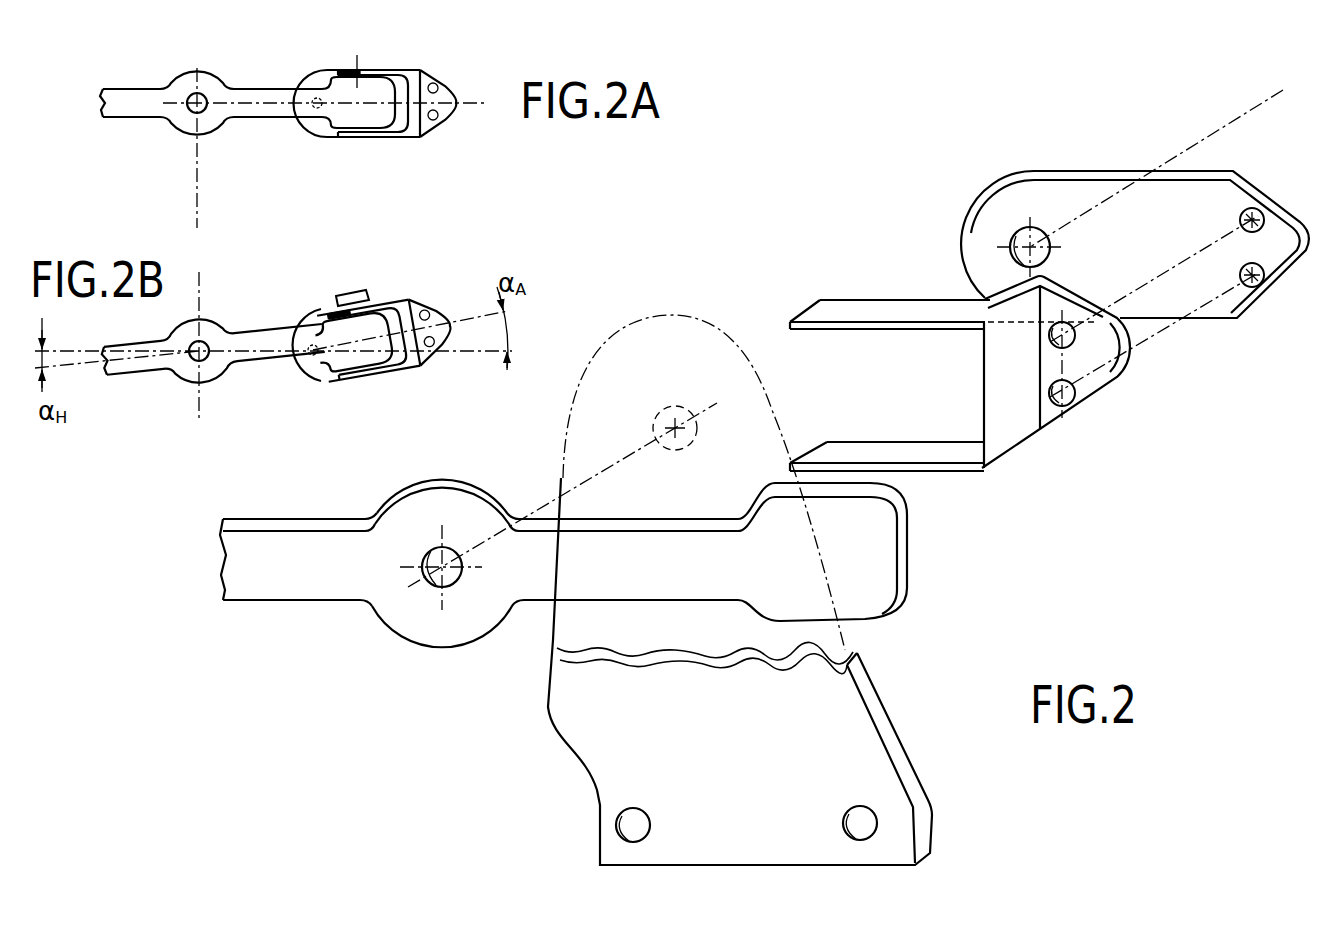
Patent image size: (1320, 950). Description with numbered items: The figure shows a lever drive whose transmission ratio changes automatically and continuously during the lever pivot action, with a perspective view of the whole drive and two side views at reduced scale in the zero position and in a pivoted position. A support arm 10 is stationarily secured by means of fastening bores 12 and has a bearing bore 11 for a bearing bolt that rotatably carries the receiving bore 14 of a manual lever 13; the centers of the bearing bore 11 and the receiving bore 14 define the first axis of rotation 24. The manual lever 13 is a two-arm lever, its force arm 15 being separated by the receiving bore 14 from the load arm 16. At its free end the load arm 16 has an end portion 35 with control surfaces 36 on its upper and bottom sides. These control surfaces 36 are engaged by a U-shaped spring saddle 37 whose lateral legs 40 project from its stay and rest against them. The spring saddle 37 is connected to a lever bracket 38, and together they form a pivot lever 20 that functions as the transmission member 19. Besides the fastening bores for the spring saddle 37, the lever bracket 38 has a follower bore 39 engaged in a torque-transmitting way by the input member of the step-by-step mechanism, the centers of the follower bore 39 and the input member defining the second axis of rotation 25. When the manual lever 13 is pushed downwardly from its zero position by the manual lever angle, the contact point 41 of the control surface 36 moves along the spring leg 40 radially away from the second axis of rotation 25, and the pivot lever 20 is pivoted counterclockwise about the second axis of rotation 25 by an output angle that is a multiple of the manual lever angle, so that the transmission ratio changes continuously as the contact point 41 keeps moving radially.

In FIG. 2, the support arm 10 is at (752, 793).
In FIG. 2, the bearing bore 11 is at (658, 416).
In FIG. 2, the fastening bores 12 is at (634, 821).
In FIG. 2A, the manual lever 13 is at (133, 87).
In FIG. 2, the manual lever 13 is at (563, 584).
In FIG. 2, the receiving bore 14 is at (430, 587).
In FIG. 2, the force arm 15 is at (283, 583).
In FIG. 2A, the load arm 16 is at (265, 110).
In FIG. 2B, the load arm 16 is at (249, 340).
In FIG. 2, the load arm 16 is at (611, 583).
In FIG. 2, the transmission member 19 is at (1003, 300).
In FIG. 2A, the pivot lever 20 is at (453, 88).
In FIG. 2B, the pivot lever 20 is at (440, 300).
In FIG. 2, the pivot lever 20 is at (1243, 320).
In FIG. 2A, the first axis of rotation 24 is at (202, 100).
In FIG. 2B, the first axis of rotation 24 is at (201, 345).
In FIG. 2, the first axis of rotation 24 is at (602, 470).
In FIG. 2A, the second axis of rotation 25 is at (313, 93).
In FIG. 2B, the second axis of rotation 25 is at (313, 357).
In FIG. 2, the second axis of rotation 25 is at (1211, 130).
In FIG. 2A, the end portion 35 is at (378, 92).
In FIG. 2, the end portion 35 is at (843, 583).
In FIG. 2B, the control surfaces 36 is at (322, 317).
In FIG. 2, the control surfaces 36 is at (879, 496).
In FIG. 2A, the spring saddle 37 is at (413, 130).
In FIG. 2, the spring saddle 37 is at (1009, 423).
In FIG. 2A, the lever bracket 38 is at (313, 128).
In FIG. 2, the lever bracket 38 is at (1146, 261).
In FIG. 2, the follower bore 39 is at (1022, 232).
In FIG. 2B, the legs 40 is at (345, 293).
In FIG. 2, the legs 40 is at (863, 458).
In FIG. 2A, the contact point 41 is at (363, 72).
In FIG. 2B, the contact point 41 is at (373, 300).